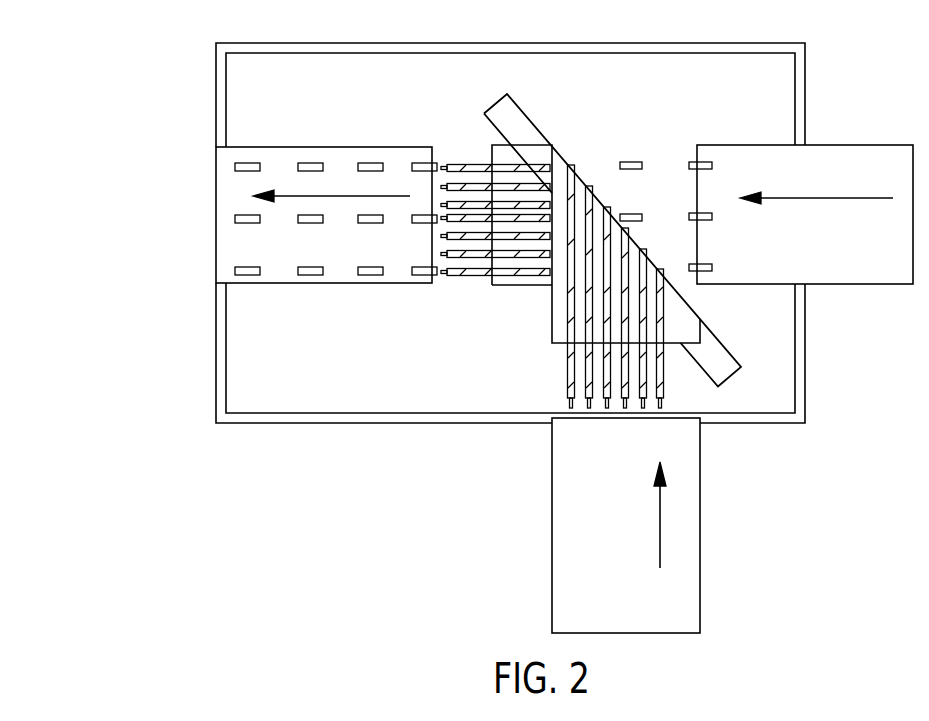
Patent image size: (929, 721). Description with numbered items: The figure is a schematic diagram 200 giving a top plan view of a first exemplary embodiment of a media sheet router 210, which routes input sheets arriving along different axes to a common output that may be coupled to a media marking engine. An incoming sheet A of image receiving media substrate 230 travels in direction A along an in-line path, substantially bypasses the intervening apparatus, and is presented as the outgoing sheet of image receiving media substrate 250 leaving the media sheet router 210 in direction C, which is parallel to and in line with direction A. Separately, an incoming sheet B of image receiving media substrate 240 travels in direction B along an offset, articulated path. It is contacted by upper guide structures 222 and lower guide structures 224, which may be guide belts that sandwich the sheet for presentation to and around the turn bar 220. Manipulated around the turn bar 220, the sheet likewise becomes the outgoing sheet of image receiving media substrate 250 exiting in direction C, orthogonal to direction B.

The schematic diagram 200 is at (128, 93).
The media sheet router 210 is at (226, 118).
The turn bar 220 is at (486, 115).
The upper guide structures 222 is at (482, 275).
The lower guide structures 224 is at (446, 275).
The incoming sheet A of image receiving media substrate 230 is at (832, 277).
The incoming sheet B of image receiving media substrate 240 is at (558, 533).
The outgoing sheet of image receiving media substrate 250 is at (338, 275).